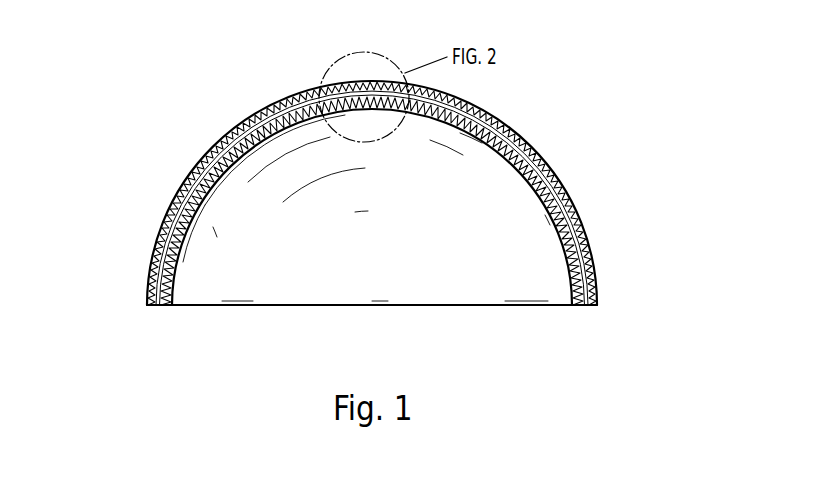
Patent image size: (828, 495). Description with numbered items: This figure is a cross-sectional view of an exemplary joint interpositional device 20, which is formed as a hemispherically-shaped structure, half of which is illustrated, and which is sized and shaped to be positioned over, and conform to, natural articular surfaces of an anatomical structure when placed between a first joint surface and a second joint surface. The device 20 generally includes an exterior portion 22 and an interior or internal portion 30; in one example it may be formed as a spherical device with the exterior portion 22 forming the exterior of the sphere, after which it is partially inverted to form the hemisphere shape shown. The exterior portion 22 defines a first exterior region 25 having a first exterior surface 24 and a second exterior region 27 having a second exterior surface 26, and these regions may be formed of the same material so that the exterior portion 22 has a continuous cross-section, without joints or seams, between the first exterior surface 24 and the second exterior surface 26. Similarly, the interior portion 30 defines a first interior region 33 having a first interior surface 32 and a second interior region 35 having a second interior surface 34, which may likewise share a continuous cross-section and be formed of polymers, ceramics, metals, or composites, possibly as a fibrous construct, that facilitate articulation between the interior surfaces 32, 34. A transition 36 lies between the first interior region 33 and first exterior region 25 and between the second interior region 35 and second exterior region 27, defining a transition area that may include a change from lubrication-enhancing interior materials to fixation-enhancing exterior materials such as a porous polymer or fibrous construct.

The joint interpositional device 20 is at (379, 194).
The exterior portion 22 is at (151, 318).
The first exterior surface 24 is at (150, 265).
The first exterior region 25 is at (490, 118).
The second exterior surface 26 is at (180, 275).
The second exterior region 27 is at (495, 150).
The interior portion 30 is at (245, 121).
The first interior surface 32 is at (273, 100).
The first interior region 33 is at (168, 212).
The second interior surface 34 is at (300, 92).
The second interior region 35 is at (186, 228).
The transition 36 is at (195, 170).